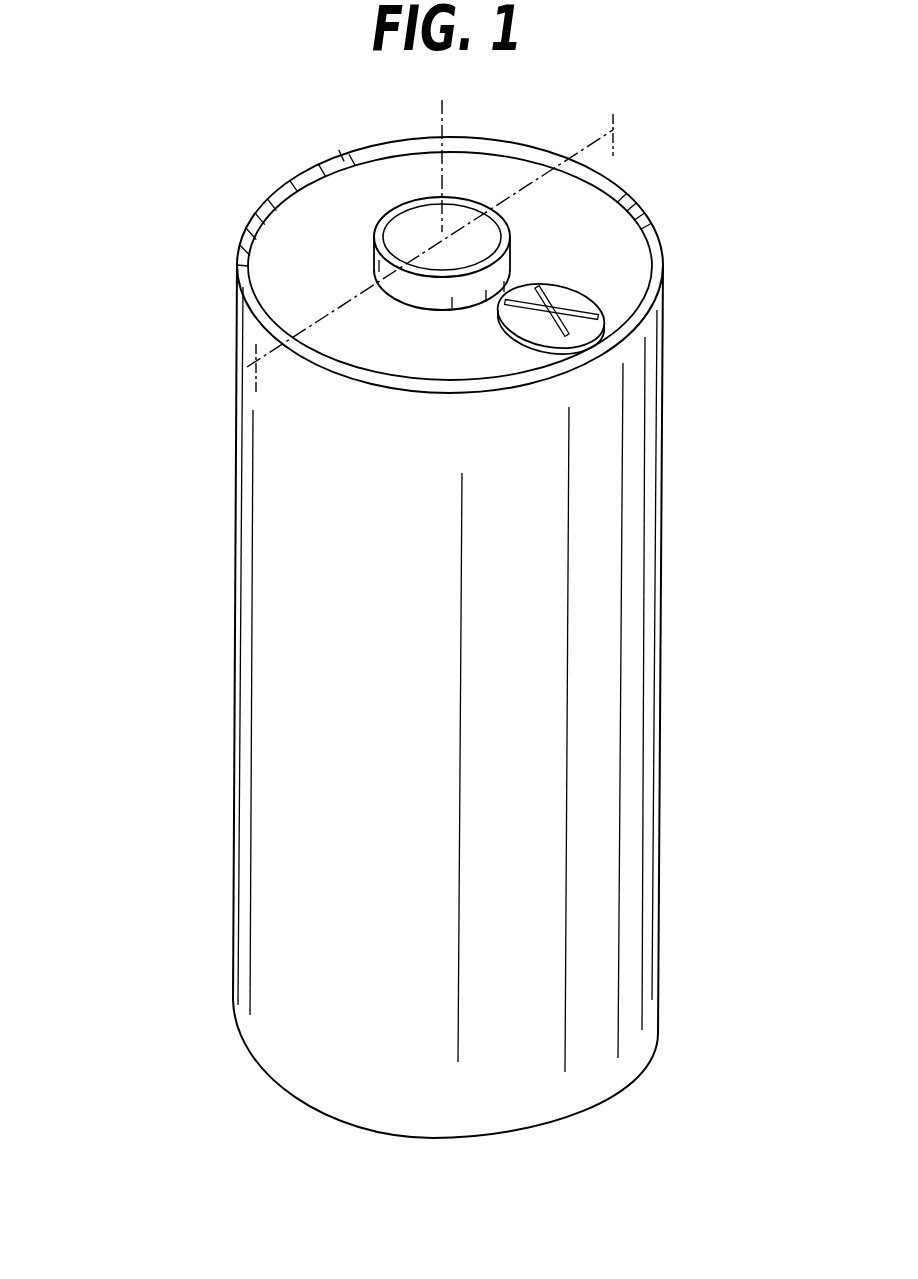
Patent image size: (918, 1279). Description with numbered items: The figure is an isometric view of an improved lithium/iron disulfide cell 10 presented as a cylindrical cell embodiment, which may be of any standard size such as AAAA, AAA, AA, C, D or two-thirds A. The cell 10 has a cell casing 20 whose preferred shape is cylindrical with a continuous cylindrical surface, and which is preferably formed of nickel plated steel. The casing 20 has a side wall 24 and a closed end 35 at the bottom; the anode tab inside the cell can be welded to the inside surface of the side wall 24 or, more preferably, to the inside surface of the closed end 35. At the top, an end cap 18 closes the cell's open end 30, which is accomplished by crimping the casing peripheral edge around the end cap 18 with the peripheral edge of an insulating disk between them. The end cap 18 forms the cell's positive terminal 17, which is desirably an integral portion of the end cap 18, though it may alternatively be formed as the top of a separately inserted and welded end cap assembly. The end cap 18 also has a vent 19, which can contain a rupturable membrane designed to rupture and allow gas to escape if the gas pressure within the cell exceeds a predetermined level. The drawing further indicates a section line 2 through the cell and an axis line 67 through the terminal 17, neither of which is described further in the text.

The cylindrical cell 10 is at (186, 545).
The positive terminal 17 is at (410, 200).
The central axis 67 is at (442, 177).
The section line 2- 2 is at (622, 137).
The open end 30 is at (582, 208).
The end cap 18 is at (633, 263).
The vent 19 is at (592, 299).
The casing side wall 24 is at (665, 477).
The cell casing 20 is at (670, 527).
The closed end 35 is at (384, 1136).